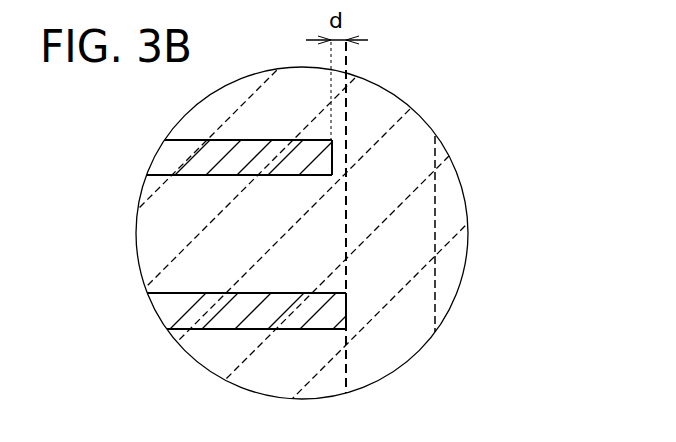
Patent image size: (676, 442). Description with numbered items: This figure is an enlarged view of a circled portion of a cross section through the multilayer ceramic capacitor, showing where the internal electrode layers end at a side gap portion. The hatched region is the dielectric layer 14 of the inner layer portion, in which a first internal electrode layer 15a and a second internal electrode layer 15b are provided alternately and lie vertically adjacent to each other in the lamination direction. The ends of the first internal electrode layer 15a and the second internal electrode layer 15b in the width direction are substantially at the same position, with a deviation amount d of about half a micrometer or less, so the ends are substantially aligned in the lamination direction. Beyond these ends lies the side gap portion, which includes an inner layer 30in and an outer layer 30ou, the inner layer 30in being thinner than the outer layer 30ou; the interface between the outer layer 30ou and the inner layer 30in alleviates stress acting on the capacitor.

The dielectric layer 14 is at (147, 233).
The first internal electrode layer 15a is at (163, 163).
The second internal electrode layer 15b is at (158, 320).
The inner layer 30in is at (413, 129).
The outer layer 30ou is at (452, 196).